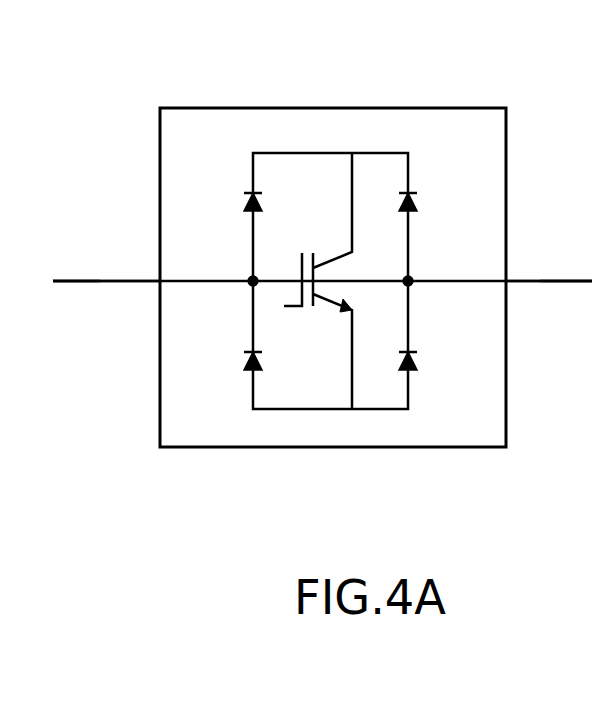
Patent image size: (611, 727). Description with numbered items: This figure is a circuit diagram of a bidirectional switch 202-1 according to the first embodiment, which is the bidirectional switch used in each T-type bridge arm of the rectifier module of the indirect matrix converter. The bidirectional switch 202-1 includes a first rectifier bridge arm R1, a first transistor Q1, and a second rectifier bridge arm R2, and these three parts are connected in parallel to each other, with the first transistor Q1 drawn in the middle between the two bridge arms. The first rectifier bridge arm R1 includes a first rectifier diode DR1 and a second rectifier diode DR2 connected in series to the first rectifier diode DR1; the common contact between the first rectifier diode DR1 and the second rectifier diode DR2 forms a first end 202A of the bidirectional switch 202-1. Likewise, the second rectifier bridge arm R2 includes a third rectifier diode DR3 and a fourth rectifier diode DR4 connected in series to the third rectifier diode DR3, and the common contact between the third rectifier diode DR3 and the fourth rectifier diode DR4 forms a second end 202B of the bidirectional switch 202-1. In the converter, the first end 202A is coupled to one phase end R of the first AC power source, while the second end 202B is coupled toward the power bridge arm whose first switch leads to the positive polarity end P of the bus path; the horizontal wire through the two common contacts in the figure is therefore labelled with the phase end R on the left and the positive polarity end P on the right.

The bidirectional switch 202-1 is at (314, 126).
The first rectifier bridge arm R1 is at (234, 148).
The second rectifier bridge arm R2 is at (430, 150).
The first end 202A is at (140, 280).
The second end 202B is at (532, 280).
The first transistor Q1 is at (318, 281).
The first rectifier diode DR1 is at (223, 204).
The second rectifier diode DR2 is at (223, 364).
The third rectifier diode DR3 is at (435, 204).
The fourth rectifier diode DR4 is at (435, 364).
The phase end R is at (76, 264).
The positive polarity end P is at (566, 264).